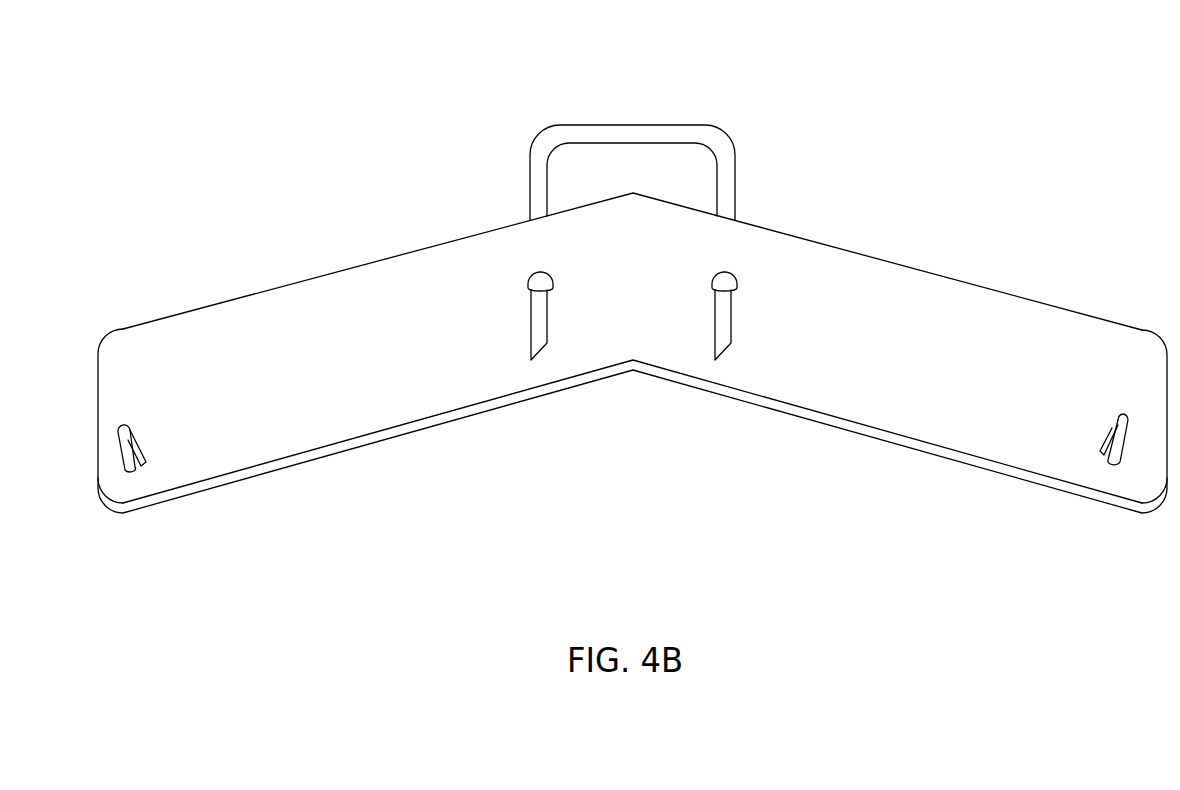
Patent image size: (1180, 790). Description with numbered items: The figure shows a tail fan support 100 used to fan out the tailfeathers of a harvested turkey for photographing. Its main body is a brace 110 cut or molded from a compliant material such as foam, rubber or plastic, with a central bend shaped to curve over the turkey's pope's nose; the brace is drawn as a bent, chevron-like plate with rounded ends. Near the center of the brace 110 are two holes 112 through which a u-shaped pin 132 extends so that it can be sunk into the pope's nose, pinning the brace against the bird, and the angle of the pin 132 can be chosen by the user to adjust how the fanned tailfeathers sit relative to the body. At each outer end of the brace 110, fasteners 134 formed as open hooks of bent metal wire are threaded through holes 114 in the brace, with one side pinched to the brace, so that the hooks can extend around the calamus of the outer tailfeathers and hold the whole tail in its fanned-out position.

The tail fan support 100 is at (240, 148).
The brace 110 is at (377, 273).
The holes 112 is at (712, 272).
The holes 114 is at (1112, 447).
The u-shaped pin 132 is at (550, 152).
The fasteners 134 is at (128, 432).